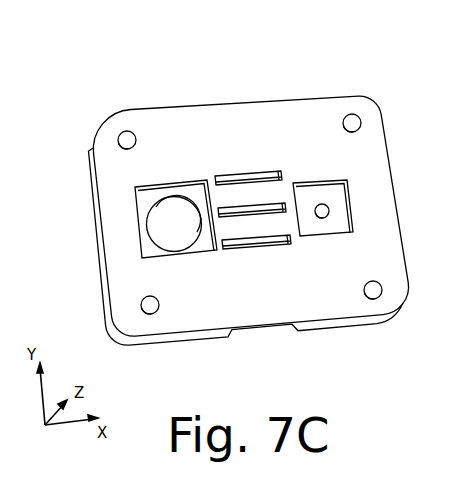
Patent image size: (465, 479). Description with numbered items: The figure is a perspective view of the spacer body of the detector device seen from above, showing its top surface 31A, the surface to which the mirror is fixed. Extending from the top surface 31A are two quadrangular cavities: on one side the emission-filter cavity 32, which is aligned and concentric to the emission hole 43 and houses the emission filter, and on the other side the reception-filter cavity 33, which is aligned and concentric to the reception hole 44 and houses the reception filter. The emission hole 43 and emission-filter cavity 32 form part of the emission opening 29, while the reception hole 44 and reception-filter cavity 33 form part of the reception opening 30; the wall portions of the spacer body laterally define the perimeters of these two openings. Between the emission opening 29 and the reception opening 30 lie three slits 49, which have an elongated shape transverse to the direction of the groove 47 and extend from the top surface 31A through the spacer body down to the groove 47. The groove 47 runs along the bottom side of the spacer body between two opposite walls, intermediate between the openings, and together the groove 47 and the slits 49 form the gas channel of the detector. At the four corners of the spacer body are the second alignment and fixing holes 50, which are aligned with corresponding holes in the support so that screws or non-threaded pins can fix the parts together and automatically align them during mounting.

The top surface 31A is at (311, 107).
The second alignment and fixing holes 50 is at (127, 131).
The emission-filter cavity 32 is at (140, 197).
The emission opening 29 is at (176, 214).
The emission hole 43 is at (157, 225).
The slits 49 is at (257, 239).
The reception-filter cavity 33 is at (348, 181).
The reception opening 30 is at (322, 203).
The reception hole 44 is at (329, 210).
The groove 47 is at (270, 332).